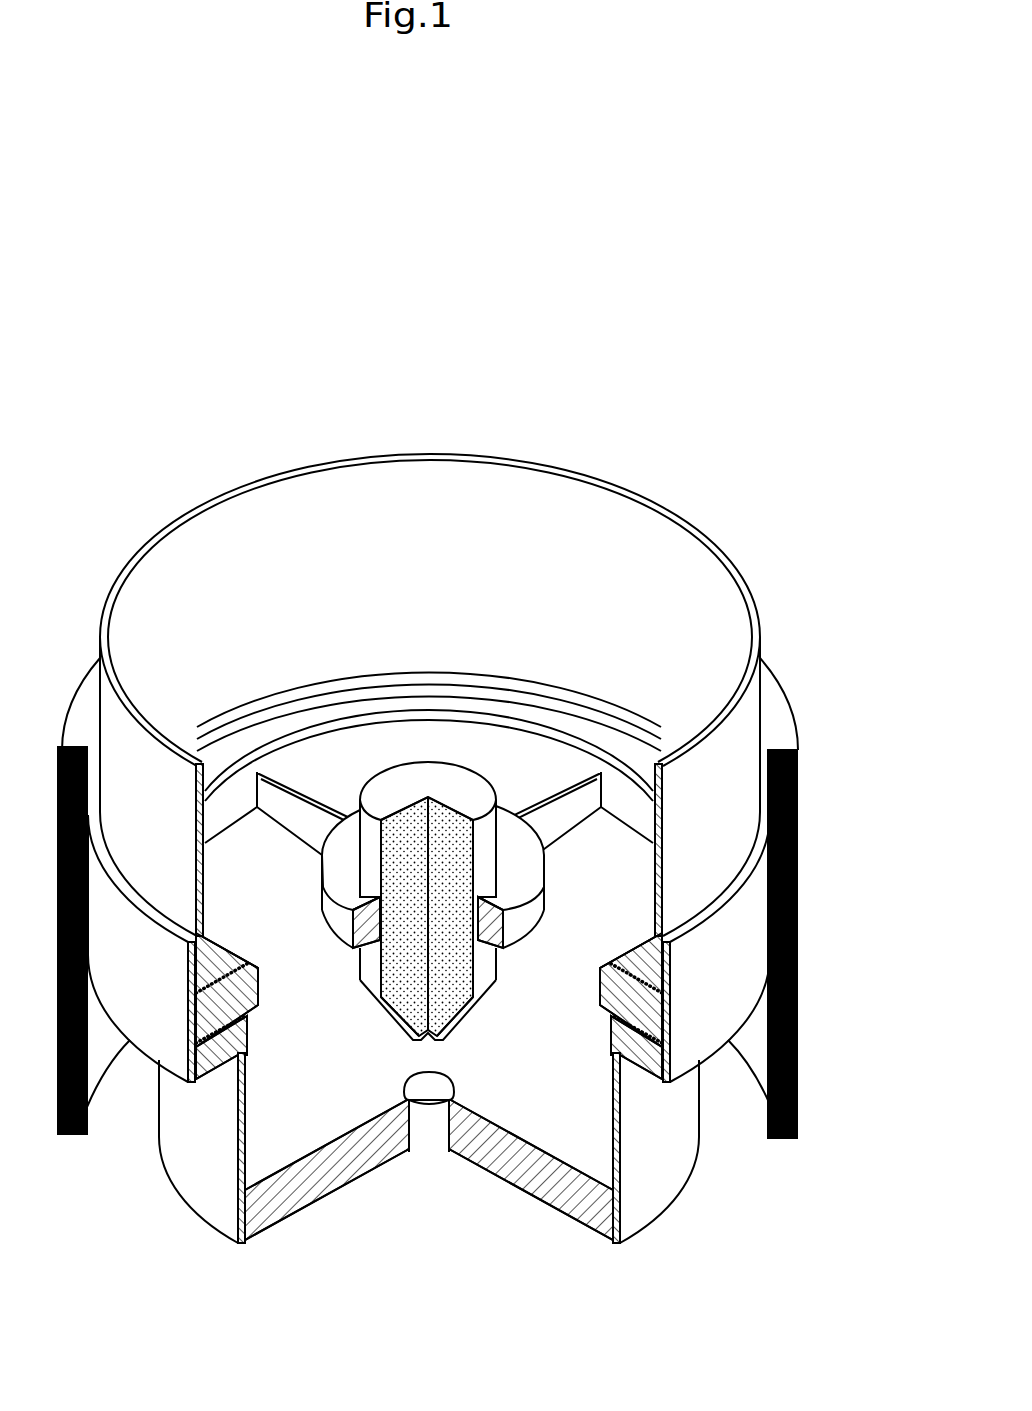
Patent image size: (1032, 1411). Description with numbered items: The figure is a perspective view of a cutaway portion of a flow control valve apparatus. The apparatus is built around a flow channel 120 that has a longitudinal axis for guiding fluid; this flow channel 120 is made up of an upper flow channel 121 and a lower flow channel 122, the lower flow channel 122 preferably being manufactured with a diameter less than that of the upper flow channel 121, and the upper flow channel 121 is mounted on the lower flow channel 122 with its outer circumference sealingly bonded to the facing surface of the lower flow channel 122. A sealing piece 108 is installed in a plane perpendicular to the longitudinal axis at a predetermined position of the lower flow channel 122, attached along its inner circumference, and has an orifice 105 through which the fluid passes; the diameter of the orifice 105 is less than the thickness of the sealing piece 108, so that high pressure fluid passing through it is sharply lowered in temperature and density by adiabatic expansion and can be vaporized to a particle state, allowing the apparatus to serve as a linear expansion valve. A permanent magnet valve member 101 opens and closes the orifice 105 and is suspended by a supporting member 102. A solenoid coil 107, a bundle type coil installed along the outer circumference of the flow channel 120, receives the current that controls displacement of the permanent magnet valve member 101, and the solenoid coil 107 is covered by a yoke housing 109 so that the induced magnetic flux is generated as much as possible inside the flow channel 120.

The permanent magnet valve member 101 is at (417, 775).
The supporting member 102 is at (515, 927).
The orifice 105 is at (427, 1113).
The solenoid coil 107 is at (797, 933).
The sealing piece 108 is at (592, 1158).
The yoke housing 109 is at (782, 728).
The flow channel 120 is at (781, 568).
The upper flow channel 121 is at (632, 498).
The lower flow channel 122 is at (650, 1180).